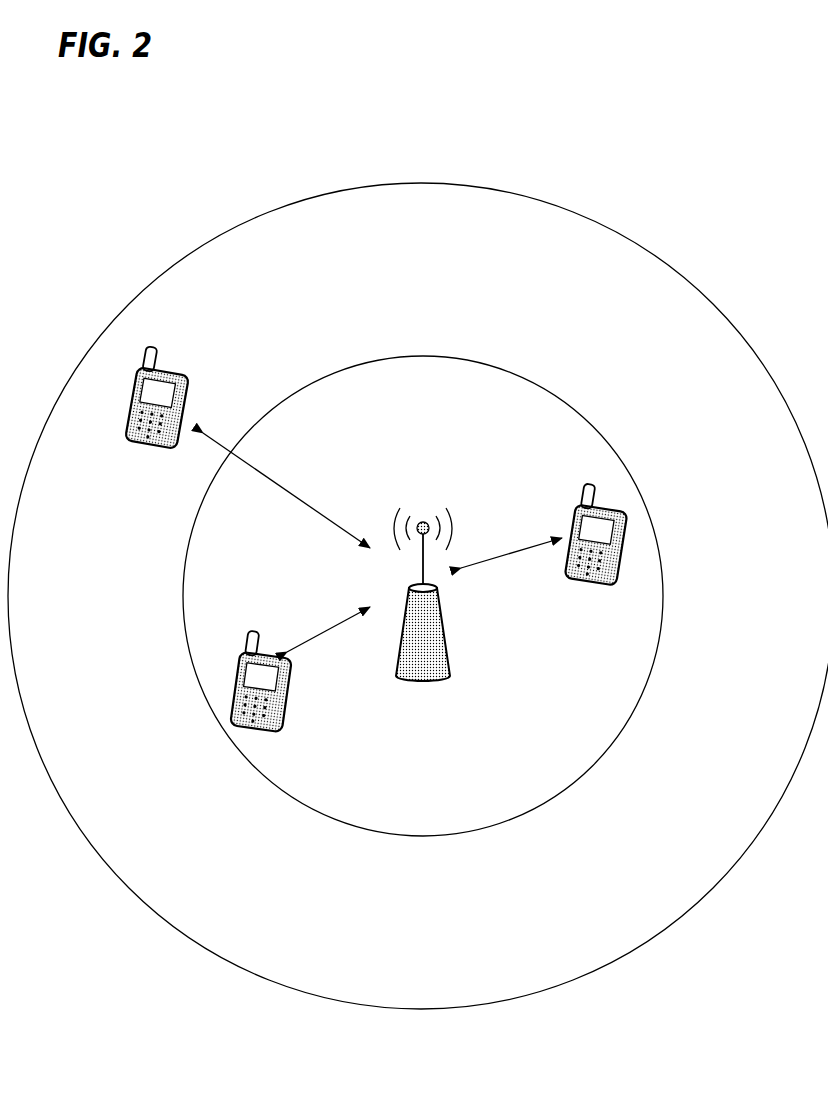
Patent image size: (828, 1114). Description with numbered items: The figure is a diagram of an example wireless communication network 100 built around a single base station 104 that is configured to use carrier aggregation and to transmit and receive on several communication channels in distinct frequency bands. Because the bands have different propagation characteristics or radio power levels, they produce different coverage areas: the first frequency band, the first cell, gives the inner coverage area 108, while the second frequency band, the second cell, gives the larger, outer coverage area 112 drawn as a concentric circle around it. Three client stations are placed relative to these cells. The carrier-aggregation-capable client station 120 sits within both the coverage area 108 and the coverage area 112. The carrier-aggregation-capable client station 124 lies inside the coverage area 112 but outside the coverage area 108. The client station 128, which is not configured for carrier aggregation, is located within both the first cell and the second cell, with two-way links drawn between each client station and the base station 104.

The wireless communication network 100 is at (499, 92).
The base station 104 is at (420, 681).
The coverage area 108 is at (423, 356).
The coverage area 112 is at (423, 183).
The client station 120 is at (236, 672).
The client station 124 is at (162, 450).
The client station 128 is at (600, 503).